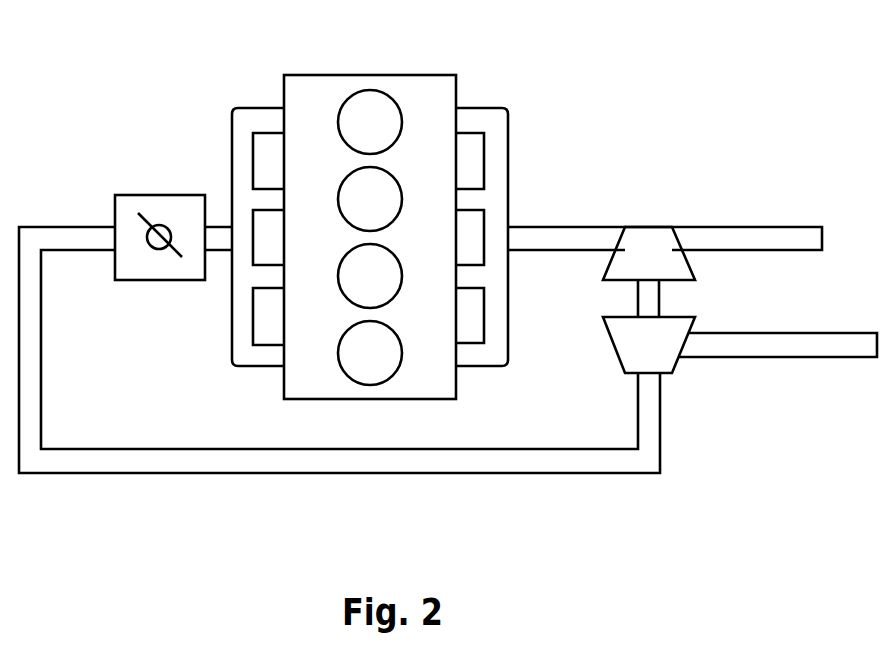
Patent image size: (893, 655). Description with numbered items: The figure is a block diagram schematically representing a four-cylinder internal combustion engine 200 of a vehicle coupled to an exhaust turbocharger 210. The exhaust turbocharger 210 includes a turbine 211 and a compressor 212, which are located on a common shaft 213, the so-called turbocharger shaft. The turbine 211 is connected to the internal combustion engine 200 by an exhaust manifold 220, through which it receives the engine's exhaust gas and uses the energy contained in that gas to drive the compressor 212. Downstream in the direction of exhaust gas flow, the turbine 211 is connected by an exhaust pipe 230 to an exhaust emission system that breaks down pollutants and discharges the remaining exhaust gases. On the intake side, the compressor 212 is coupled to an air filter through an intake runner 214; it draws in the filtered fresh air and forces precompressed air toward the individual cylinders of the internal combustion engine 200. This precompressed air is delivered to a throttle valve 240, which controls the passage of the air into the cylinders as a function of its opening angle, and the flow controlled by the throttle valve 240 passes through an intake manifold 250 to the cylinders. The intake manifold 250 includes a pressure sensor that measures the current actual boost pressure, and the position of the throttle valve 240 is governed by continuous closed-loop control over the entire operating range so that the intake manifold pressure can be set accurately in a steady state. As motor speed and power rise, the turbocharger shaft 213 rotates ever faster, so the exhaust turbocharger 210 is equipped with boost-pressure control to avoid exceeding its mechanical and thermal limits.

The internal combustion engine 200 is at (413, 75).
The intake manifold 250 is at (201, 98).
The exhaust manifold 220 is at (527, 148).
The throttle valve 240 is at (153, 195).
The exhaust pipe 230 is at (783, 227).
The exhaust turbocharger 210 is at (676, 300).
The turbine 211 is at (649, 253).
The compressor 212 is at (649, 345).
The turbocharger shaft 213 is at (638, 303).
The intake runner 214 is at (828, 357).